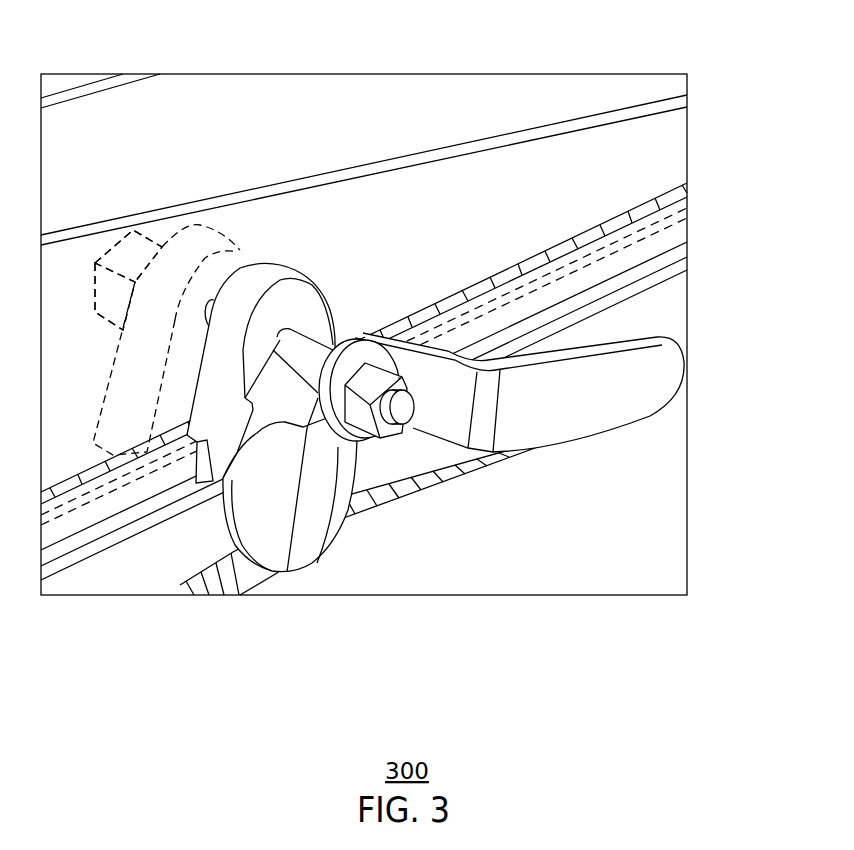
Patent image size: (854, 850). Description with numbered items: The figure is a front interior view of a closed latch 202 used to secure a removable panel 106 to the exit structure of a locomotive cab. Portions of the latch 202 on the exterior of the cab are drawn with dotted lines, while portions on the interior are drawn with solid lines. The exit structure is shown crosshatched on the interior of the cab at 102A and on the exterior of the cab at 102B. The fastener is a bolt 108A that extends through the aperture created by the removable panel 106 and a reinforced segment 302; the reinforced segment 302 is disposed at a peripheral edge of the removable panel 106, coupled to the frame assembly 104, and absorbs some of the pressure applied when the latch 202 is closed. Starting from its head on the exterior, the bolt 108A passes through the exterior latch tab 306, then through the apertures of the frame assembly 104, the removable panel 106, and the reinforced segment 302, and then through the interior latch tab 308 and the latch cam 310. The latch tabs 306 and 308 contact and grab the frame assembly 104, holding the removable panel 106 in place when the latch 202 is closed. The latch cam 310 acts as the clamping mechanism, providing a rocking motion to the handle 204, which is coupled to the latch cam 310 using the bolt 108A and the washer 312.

The removable panel 106 is at (205, 112).
The reinforced segment 302 is at (441, 190).
The frame assembly 104 is at (693, 215).
The exit structure (interior of the cab) 102A is at (232, 583).
The exit structure (exterior of the cab) 102B is at (652, 198).
The bolt 108A is at (108, 258).
The latch tab 306 is at (120, 350).
The latch tab 308 is at (197, 382).
The latch cam 310 is at (223, 528).
The washer 312 is at (357, 435).
The handle 204 is at (648, 418).
The latch 202 is at (588, 447).